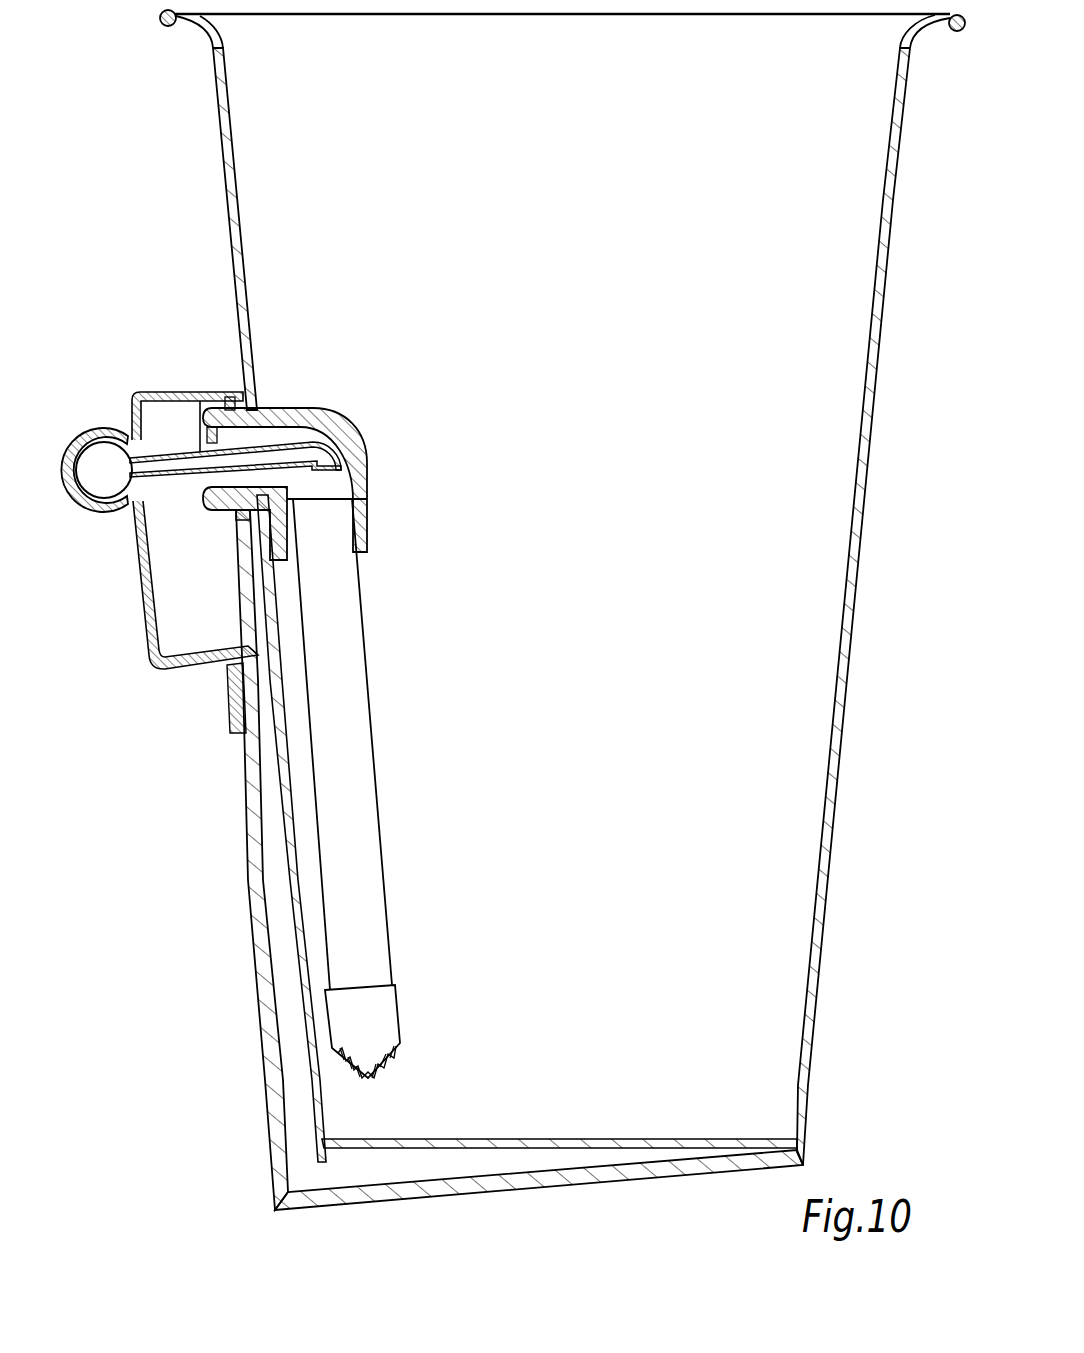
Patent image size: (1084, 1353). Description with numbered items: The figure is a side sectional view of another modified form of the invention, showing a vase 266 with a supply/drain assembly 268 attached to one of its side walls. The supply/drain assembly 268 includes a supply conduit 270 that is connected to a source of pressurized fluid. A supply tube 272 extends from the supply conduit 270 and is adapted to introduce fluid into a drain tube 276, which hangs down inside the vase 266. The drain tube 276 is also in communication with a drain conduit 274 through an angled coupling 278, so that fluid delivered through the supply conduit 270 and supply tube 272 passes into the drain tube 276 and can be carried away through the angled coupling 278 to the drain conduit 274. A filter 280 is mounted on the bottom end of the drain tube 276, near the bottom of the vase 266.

The vase 266 is at (180, 93).
The supply/drain assembly 268 is at (130, 418).
The supply conduit 270 is at (96, 478).
The rod 272 is at (175, 447).
The drain conduit 274 is at (168, 599).
The drain tube 276 is at (350, 641).
The angled coupling 278 is at (367, 499).
The filter 280 is at (388, 1007).